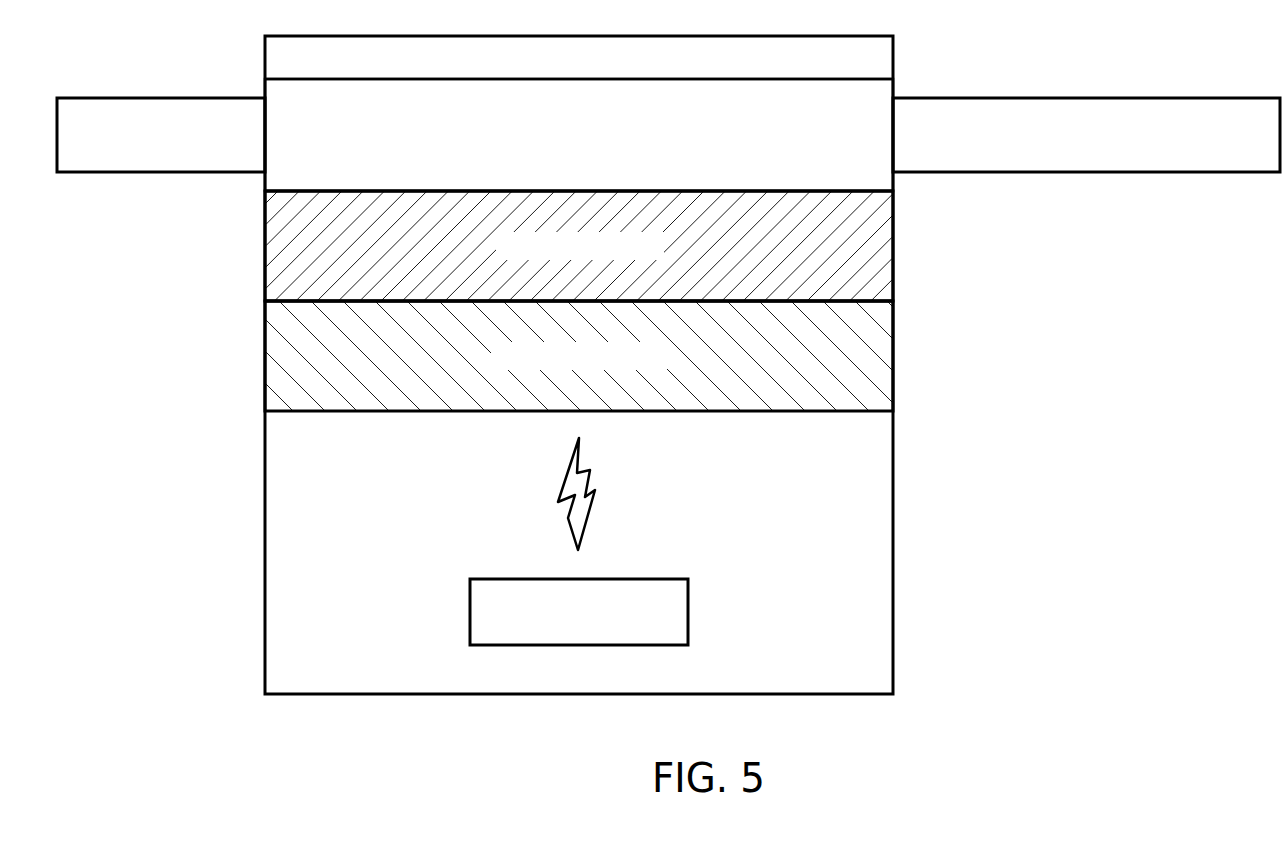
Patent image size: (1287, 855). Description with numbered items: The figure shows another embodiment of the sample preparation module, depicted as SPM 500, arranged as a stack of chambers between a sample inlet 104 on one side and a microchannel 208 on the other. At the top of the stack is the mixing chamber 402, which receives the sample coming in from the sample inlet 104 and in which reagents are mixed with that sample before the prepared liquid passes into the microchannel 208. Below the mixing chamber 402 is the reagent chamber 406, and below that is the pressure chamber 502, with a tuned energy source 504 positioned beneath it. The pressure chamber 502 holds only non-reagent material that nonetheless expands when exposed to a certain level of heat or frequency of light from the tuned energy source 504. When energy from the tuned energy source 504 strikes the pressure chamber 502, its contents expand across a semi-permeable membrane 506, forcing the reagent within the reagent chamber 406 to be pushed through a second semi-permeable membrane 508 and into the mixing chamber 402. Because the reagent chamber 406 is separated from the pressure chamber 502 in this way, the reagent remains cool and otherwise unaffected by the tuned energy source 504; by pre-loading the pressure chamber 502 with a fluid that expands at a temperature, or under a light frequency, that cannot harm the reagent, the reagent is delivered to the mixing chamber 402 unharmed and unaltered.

The sample inlet 104 is at (143, 98).
The microchannel 208 is at (1120, 98).
The mixing chamber 402 is at (736, 149).
The reagent chamber 406 is at (855, 237).
The sample preparation module 500 is at (360, 653).
The pressure chamber 502 is at (855, 367).
The tuned energy source 504 is at (688, 612).
The semi-permeable membrane 506 is at (893, 301).
The semi-permeable membrane 508 is at (893, 191).